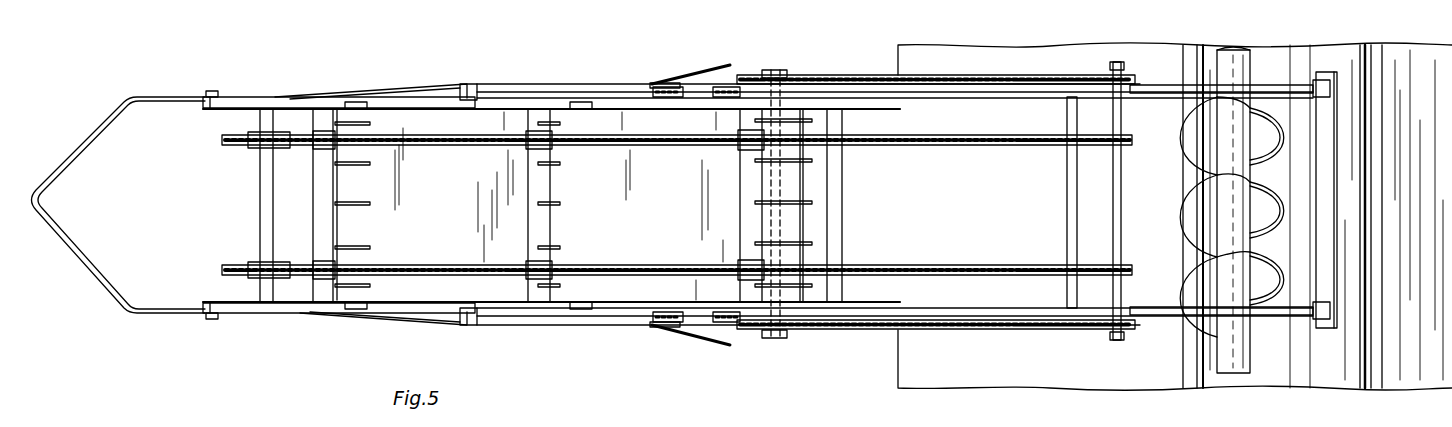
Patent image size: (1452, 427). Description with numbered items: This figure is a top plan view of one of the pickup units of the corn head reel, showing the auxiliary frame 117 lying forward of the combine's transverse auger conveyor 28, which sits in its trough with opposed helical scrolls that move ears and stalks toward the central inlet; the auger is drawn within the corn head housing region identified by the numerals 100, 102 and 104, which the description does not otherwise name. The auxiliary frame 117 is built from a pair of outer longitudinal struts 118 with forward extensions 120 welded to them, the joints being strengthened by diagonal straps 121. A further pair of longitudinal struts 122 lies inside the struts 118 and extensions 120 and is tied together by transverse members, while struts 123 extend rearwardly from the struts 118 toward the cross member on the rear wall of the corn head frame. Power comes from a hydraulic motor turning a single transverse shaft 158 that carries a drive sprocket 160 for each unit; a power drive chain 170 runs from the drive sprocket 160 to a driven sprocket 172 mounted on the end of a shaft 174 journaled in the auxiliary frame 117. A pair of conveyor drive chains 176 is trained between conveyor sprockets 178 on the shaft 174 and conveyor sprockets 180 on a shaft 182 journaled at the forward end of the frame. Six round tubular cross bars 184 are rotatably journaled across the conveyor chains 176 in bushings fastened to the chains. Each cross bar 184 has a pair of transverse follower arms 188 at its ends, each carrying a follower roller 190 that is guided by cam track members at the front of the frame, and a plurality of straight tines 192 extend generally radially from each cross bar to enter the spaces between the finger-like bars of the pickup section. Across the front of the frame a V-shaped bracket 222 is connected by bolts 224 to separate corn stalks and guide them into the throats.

The transverse auger conveyor 28 is at (1195, 172).
The housing 100 is at (1327, 185).
The housing wall 102 is at (1348, 362).
The housing opening 104 is at (1027, 93).
The auxiliary frame 117 is at (471, 84).
The outer longitudinal struts 118 is at (612, 84).
The forward extensions 120 is at (388, 97).
The diagonal straps 121 is at (428, 86).
The longitudinal struts 122 is at (490, 146).
The struts 123 is at (1277, 88).
The transverse shaft 158 is at (1121, 115).
The drive sprocket 160 is at (1115, 336).
The power drive chain 170 is at (973, 330).
The driven sprocket 172 is at (790, 336).
The shaft 174 is at (775, 341).
The conveyor drive chains 176 is at (428, 148).
The conveyor sprockets 178 is at (810, 147).
The conveyor sprockets 180 is at (222, 140).
The shaft 182 is at (262, 185).
The cross bars 184 is at (322, 236).
The follower arms 188 is at (557, 303).
The follower roller 190 is at (353, 312).
The tines 192 is at (364, 203).
The V-shaped bracket 222 is at (74, 153).
The bolts 224 is at (207, 92).